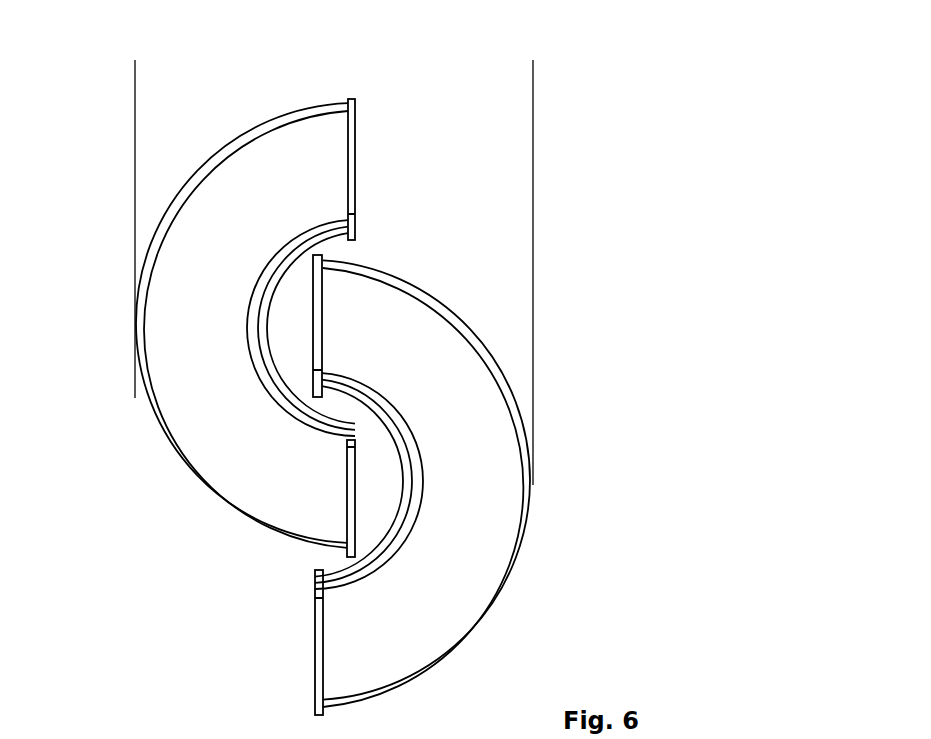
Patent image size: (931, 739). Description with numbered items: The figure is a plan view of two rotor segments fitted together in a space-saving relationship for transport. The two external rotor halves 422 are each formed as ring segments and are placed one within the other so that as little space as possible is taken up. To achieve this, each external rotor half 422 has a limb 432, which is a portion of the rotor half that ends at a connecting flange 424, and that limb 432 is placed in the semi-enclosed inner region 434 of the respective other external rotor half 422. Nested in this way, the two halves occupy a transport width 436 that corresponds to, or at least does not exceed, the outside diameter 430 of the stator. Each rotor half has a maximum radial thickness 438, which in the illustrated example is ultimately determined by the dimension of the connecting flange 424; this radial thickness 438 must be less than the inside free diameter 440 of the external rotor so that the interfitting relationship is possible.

The outside diameter 430 is at (334, 271).
The transport width 436 is at (135, 87).
The external rotor half 422 is at (172, 418).
The connecting flange 424 is at (352, 180).
The limb 432 is at (327, 152).
The semi-enclosed inner region 434 is at (293, 322).
The maximum radial thickness 438 is at (467, 715).
The inside free diameter 440 is at (452, 398).